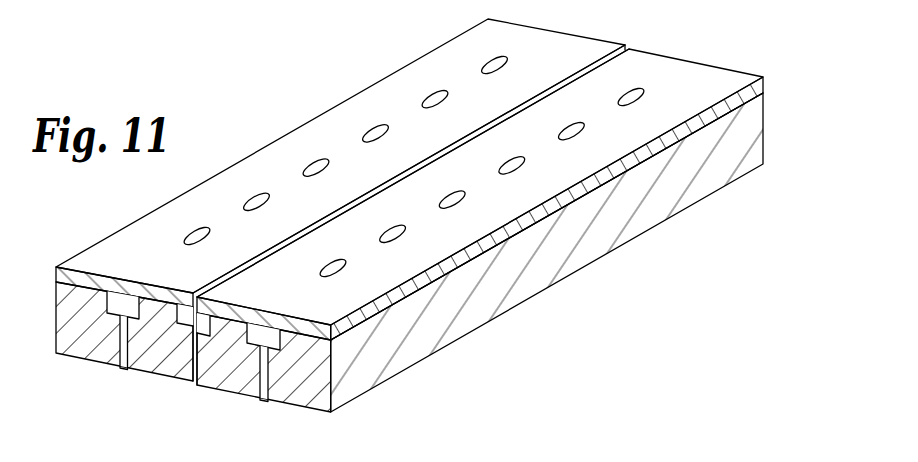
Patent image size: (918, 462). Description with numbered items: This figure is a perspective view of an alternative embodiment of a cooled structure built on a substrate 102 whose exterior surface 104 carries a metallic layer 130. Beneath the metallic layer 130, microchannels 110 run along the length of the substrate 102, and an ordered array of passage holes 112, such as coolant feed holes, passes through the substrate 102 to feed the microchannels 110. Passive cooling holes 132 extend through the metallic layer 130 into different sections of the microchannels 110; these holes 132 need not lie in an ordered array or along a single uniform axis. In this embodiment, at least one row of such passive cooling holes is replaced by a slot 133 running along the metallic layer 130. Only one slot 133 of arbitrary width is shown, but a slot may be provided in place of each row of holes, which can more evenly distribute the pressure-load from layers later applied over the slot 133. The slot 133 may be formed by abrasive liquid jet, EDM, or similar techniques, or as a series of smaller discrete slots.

The substrate 102 is at (697, 173).
The exterior surface 104 is at (580, 197).
The microchannels 110 is at (248, 342).
The passage holes 112 is at (263, 393).
The metallic layer 130 is at (764, 81).
The passive cooling holes 132 is at (573, 127).
The slot 133 is at (382, 186).